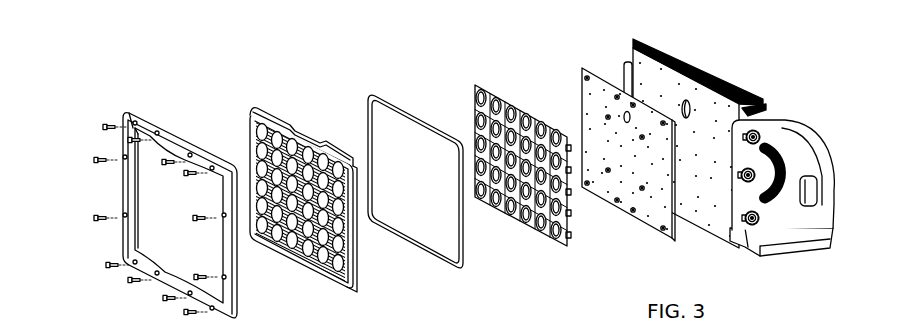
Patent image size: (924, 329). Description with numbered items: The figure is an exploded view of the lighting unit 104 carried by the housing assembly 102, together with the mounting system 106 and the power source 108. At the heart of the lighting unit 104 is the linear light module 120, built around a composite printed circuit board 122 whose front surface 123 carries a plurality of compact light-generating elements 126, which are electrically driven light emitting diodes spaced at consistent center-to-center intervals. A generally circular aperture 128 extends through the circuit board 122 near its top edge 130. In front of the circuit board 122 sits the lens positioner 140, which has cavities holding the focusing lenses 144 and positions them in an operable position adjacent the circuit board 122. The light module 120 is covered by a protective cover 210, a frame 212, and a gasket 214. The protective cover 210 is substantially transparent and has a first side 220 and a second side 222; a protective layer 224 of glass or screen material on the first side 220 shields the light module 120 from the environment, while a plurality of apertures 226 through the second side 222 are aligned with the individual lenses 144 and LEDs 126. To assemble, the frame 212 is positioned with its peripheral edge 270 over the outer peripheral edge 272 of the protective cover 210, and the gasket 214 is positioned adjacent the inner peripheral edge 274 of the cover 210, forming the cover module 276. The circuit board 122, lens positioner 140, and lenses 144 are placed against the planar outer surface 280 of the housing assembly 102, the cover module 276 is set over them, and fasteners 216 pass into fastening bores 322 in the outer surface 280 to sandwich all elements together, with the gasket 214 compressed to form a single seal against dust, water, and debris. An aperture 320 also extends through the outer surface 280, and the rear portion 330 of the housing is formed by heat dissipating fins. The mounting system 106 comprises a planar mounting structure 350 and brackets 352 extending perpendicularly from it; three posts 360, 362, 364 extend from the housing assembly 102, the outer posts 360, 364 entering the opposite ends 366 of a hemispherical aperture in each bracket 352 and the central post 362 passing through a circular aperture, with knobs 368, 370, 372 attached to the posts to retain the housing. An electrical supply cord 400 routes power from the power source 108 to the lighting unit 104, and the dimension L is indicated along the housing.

The housing assembly 102 is at (711, 124).
The lighting unit 104 is at (682, 270).
The mounting system 106 is at (804, 249).
The power source 108 is at (815, 177).
The linear light module 120 is at (571, 154).
The composite printed circuit board 122 is at (598, 137).
The front surface 123 is at (596, 74).
The light-generating elements 126 is at (565, 88).
The circular aperture 128 is at (624, 118).
The top edge 130 is at (648, 97).
The lens positioner 140 is at (547, 184).
The focusing lenses 144 is at (516, 205).
The protective cover 210 is at (317, 178).
The frame 212 is at (180, 203).
The gasket 214 is at (415, 163).
The fasteners 216 is at (108, 122).
The first side 220 is at (317, 186).
The second side 222 is at (354, 268).
The protective layer 224 is at (251, 234).
The apertures 226 is at (336, 150).
The peripheral edge 270 is at (158, 125).
The outer peripheral edge 272 is at (258, 108).
The inner peripheral edge 274 is at (344, 160).
The cover module 276 is at (261, 176).
The outer surface 280 is at (741, 100).
The aperture 320 is at (683, 96).
The fastening bores 322 is at (637, 38).
The rear portion 330 is at (799, 185).
The mounting structure 350 is at (777, 258).
The brackets 352 is at (812, 231).
The outer post 360 is at (777, 148).
The central post 362 is at (781, 185).
The outer post 364 is at (832, 207).
The opposite ends 366 is at (760, 133).
The knob 368 is at (767, 133).
The knob 370 is at (772, 167).
The knob 372 is at (760, 197).
The electrical supply cord 400 is at (800, 180).
The length L is at (632, 38).